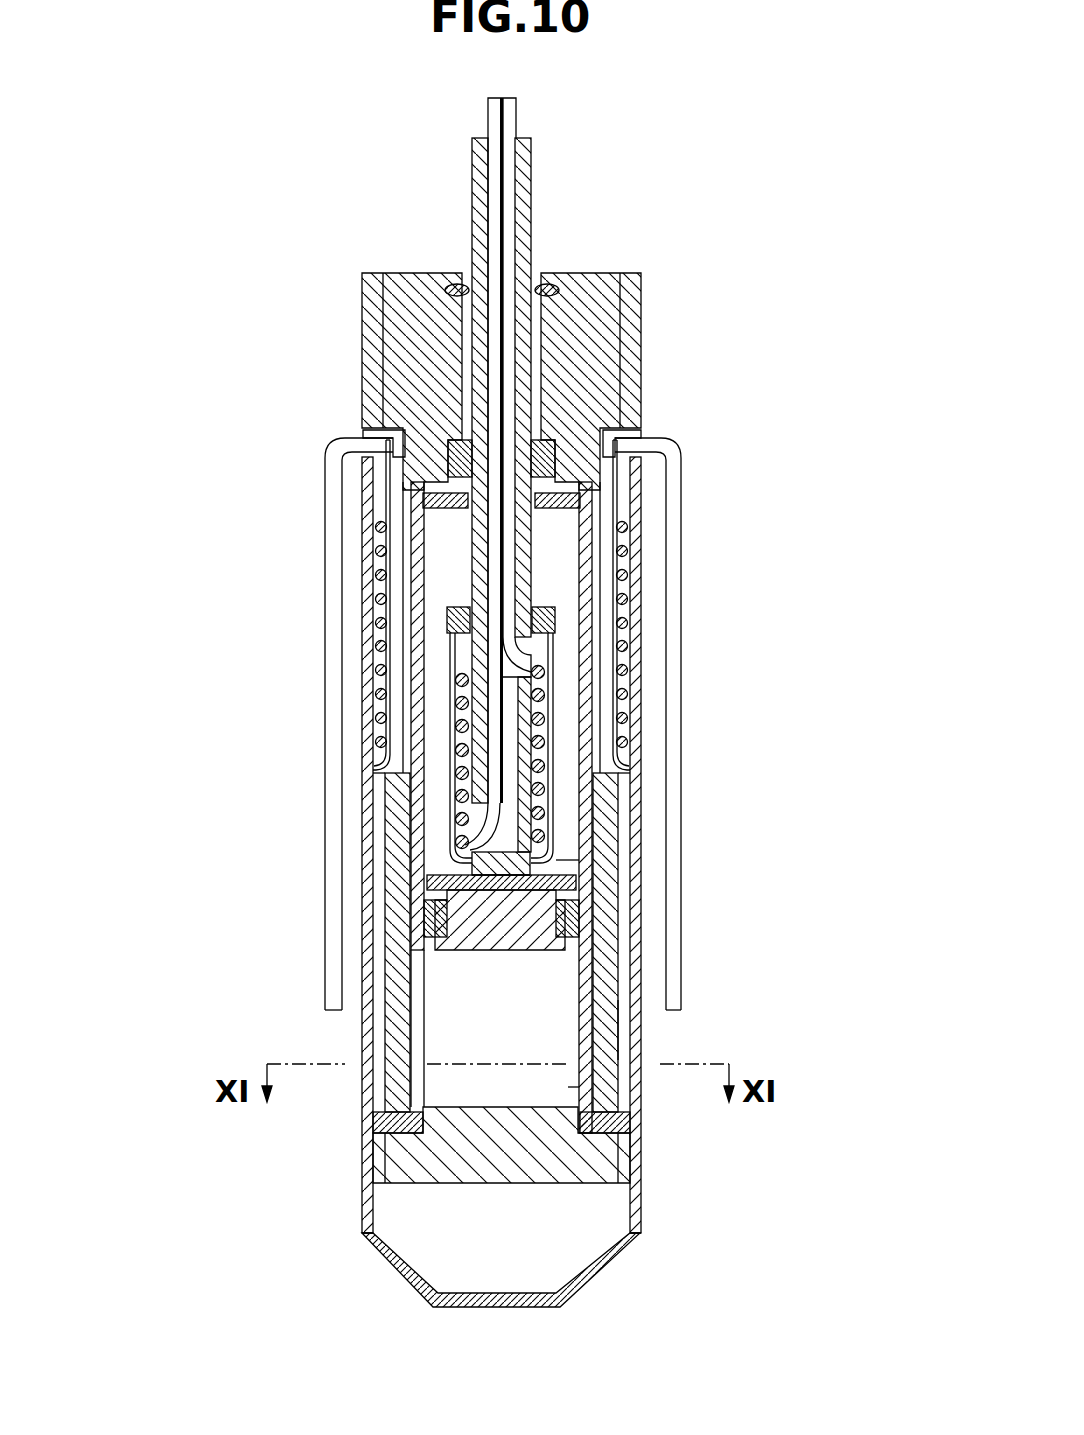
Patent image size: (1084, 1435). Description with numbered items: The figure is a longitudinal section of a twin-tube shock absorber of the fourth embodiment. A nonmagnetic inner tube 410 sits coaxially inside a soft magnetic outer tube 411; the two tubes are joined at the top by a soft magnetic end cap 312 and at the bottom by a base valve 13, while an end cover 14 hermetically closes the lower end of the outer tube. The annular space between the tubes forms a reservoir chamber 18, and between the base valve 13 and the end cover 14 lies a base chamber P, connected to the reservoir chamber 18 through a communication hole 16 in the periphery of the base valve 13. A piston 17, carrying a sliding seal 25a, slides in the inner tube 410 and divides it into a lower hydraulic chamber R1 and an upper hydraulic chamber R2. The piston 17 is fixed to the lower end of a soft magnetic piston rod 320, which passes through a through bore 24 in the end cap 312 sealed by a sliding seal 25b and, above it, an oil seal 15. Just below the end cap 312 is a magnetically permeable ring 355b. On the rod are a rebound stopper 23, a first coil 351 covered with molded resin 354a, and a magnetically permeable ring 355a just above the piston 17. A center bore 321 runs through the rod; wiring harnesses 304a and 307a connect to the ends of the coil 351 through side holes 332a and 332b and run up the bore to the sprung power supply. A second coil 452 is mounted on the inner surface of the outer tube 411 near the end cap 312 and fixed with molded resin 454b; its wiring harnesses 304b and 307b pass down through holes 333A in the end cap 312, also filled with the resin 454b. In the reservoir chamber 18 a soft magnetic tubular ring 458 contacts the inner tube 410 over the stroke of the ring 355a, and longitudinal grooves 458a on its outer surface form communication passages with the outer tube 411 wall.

The wiring harness 307a is at (488, 122).
The wiring harness 304a is at (518, 112).
The oil seal 15 is at (452, 285).
The end cap 312 is at (417, 343).
The through bore 24 is at (542, 340).
The holes 333A is at (385, 437).
The sliding seal 25b is at (455, 468).
The magnetically permeable ring 355b is at (445, 505).
The molded resin 454b is at (378, 540).
The rebound stopper 23 is at (455, 630).
The side hole 332a is at (535, 668).
The reservoir chamber 18 is at (600, 665).
The molded resin 354a is at (460, 723).
The coil 452 is at (380, 748).
The coil 351 is at (470, 800).
The side hole 332b is at (460, 830).
The upper hydraulic chamber R2 is at (560, 860).
The piston rod 320 is at (480, 870).
The magnetically permeable ring 355a is at (430, 883).
The sliding seal 25a is at (427, 922).
The wiring harness 304b is at (680, 972).
The wiring harness 307b is at (325, 977).
The grooves 458a is at (625, 1030).
The center bore 321 is at (507, 837).
The piston 17 is at (533, 930).
The outer tube 411 is at (365, 1033).
The magnetically permeable ring 458 is at (603, 1050).
The lower hydraulic chamber R1 is at (558, 1087).
The inner tube 410 is at (410, 1127).
The communication hole 16 is at (622, 1158).
The base chamber P is at (408, 1225).
The base valve 13 is at (488, 1160).
The end cover 14 is at (610, 1265).